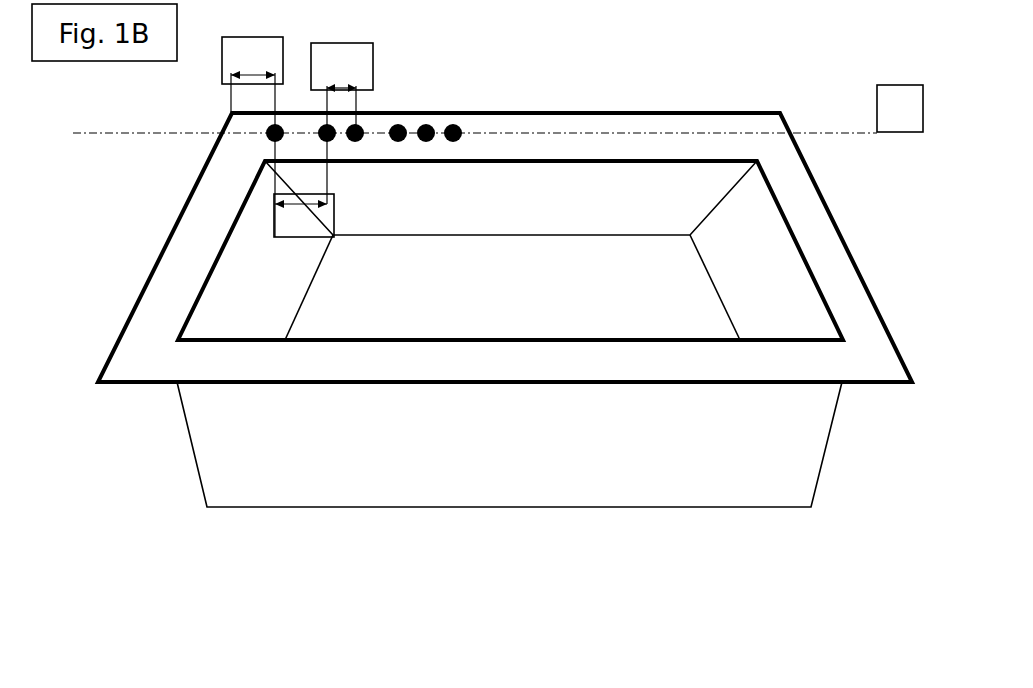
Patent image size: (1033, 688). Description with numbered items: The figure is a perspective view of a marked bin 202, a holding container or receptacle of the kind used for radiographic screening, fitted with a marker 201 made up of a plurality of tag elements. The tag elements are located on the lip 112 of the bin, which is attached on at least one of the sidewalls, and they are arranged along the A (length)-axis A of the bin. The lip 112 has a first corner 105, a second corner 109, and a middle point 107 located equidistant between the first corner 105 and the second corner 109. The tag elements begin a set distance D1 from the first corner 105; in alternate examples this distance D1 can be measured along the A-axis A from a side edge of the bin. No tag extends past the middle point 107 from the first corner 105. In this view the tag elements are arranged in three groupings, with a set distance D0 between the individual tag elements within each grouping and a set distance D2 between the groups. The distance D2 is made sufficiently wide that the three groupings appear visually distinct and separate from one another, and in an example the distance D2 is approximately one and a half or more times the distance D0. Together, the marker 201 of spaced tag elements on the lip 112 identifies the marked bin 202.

The first corner 105 is at (247, 127).
The middle point 107 is at (505, 135).
The second corner 109 is at (683, 133).
The lip 112 is at (815, 215).
The marker 201 is at (364, 161).
The marked bin 202 is at (119, 510).
The set distance between individual tag elements D0 is at (342, 123).
The set distance from first corner D1 is at (252, 137).
The set distance between groups of tag elements D2 is at (304, 215).
The A (length)-axis A is at (900, 108).